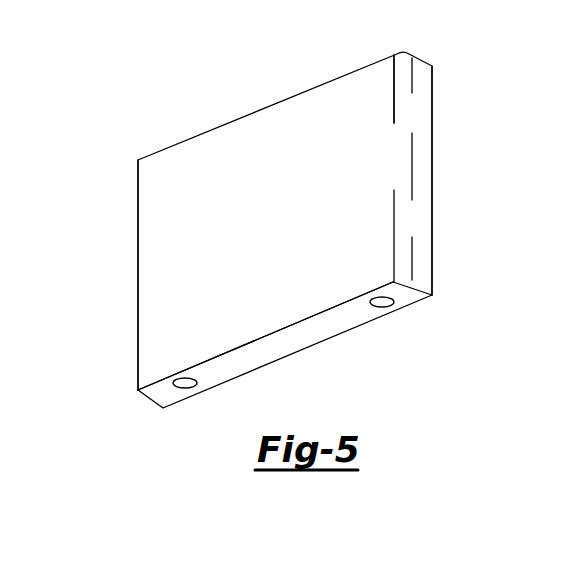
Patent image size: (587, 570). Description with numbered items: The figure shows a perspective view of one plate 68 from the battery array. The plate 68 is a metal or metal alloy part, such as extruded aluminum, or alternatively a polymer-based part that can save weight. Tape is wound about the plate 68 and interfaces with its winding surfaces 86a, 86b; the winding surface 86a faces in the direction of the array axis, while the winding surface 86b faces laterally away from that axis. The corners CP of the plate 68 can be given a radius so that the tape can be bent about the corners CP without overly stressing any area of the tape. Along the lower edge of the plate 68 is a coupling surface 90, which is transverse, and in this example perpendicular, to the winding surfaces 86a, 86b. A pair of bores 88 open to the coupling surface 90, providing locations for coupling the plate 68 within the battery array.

The plate 68 is at (151, 248).
The winding surface 86a is at (391, 157).
The winding surface 86b is at (418, 186).
The bores 88 is at (187, 388).
The coupling surface 90 is at (272, 347).
The corners CP is at (461, 272).